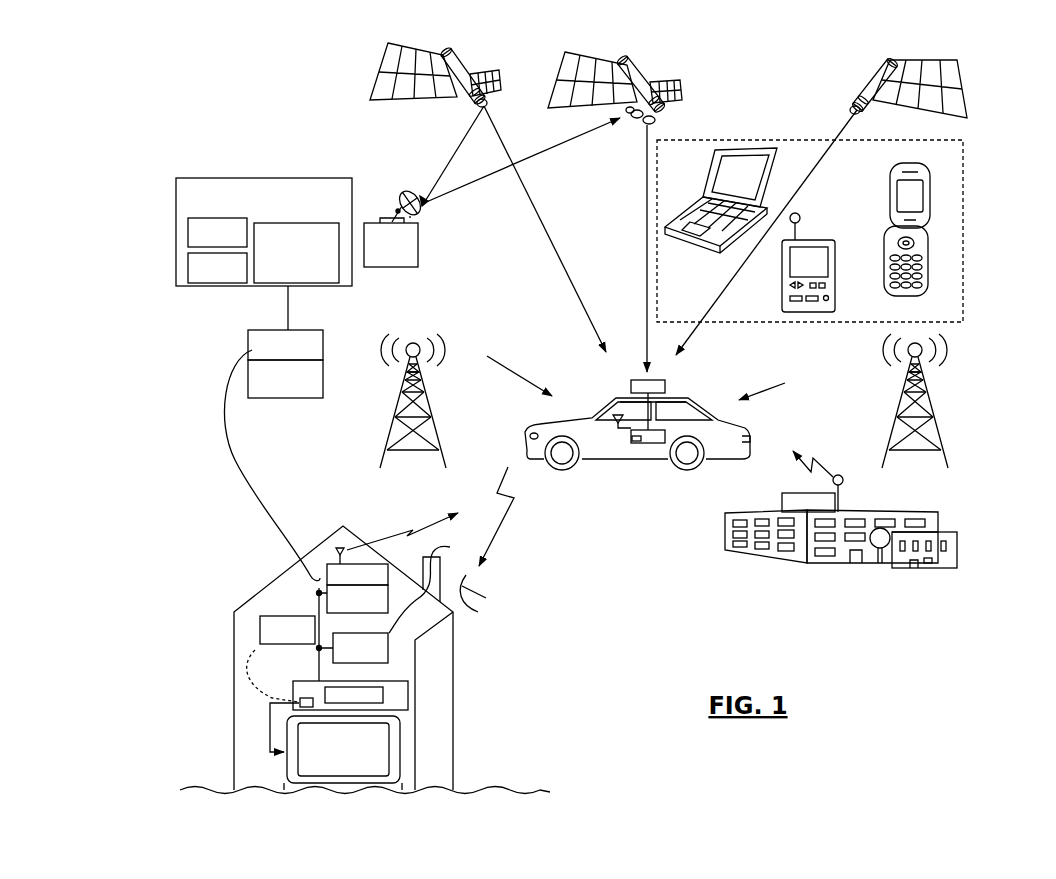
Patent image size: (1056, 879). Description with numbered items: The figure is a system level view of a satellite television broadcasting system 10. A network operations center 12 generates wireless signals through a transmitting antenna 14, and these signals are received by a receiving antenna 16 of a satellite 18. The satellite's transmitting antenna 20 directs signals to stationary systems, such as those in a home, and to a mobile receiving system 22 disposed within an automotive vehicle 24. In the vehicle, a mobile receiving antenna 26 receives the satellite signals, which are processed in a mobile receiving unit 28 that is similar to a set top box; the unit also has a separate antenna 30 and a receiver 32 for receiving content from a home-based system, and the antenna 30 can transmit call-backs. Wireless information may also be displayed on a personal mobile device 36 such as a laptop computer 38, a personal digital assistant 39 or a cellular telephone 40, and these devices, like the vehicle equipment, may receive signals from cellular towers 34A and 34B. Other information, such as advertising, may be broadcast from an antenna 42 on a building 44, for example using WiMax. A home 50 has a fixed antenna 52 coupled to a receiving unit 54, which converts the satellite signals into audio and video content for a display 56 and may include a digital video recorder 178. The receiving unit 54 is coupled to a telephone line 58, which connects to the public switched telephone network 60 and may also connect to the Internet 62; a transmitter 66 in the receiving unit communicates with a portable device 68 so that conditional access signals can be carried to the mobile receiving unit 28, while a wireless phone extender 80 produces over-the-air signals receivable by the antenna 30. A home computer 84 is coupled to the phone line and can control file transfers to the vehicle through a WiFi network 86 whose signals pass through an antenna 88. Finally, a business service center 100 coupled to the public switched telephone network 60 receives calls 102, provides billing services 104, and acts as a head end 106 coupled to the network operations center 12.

The satellite television broadcasting system 10 is at (757, 44).
The network operations center 12 is at (418, 246).
The transmitting antenna 14 is at (424, 206).
The receiving antenna 16 is at (630, 118).
The satellite 18 is at (467, 62).
The transmitting antenna 20 is at (655, 118).
The mobile receiving system 22 is at (652, 408).
The automotive vehicle 24 is at (674, 426).
The mobile receiving antenna 26 is at (630, 385).
The mobile receiving unit 28 is at (650, 444).
The separate antenna 30 is at (616, 423).
The receiver 32 is at (636, 443).
The cellular tower 34A is at (432, 405).
The cellular tower 34B is at (897, 406).
The personal mobile device 36 is at (845, 231).
The laptop computer 38 is at (691, 240).
The personal digital assistant 39 is at (822, 246).
The cellular telephone 40 is at (890, 212).
The antenna 42 is at (845, 481).
The building 44 is at (847, 509).
The home 50 is at (364, 630).
The fixed antenna 52 is at (478, 605).
The receiving unit 54 is at (347, 699).
The display 56 is at (395, 753).
The telephone line 58 is at (312, 574).
The public switched telephone network 60 is at (252, 344).
The Internet 62 is at (305, 396).
The transmitter 66 is at (300, 702).
The portable device 68 is at (260, 627).
The wireless phone extender 80 is at (451, 550).
The home computer 84 is at (388, 591).
The WiFi network 86 is at (370, 564).
The antenna 88 is at (340, 548).
The business service center 100 is at (261, 211).
The calls 102 is at (188, 229).
The billing services 104 is at (188, 277).
The head end 106 is at (332, 267).
The digital video recorder 178 is at (385, 694).